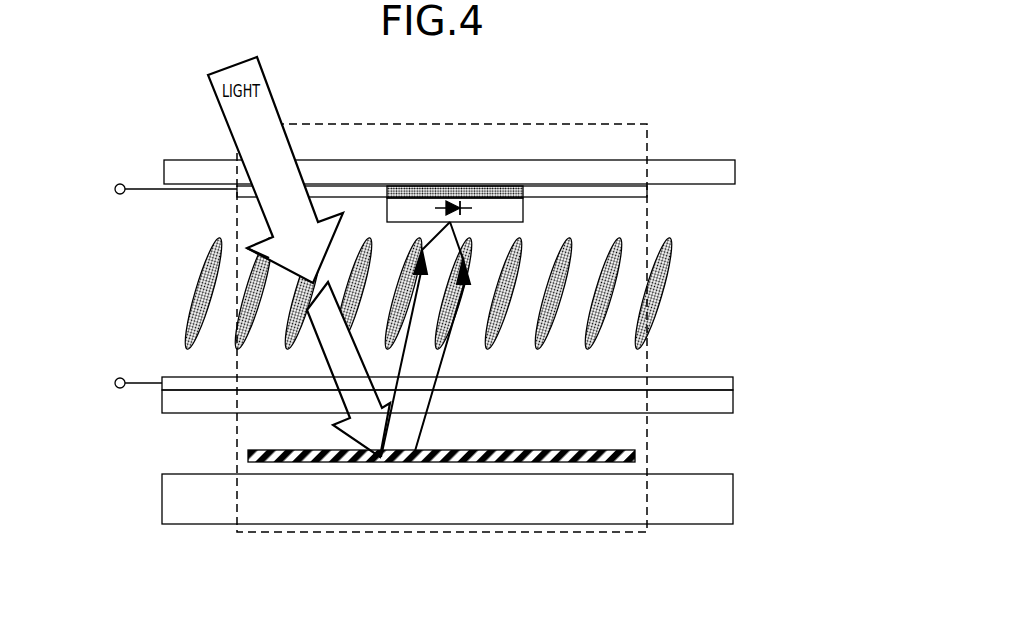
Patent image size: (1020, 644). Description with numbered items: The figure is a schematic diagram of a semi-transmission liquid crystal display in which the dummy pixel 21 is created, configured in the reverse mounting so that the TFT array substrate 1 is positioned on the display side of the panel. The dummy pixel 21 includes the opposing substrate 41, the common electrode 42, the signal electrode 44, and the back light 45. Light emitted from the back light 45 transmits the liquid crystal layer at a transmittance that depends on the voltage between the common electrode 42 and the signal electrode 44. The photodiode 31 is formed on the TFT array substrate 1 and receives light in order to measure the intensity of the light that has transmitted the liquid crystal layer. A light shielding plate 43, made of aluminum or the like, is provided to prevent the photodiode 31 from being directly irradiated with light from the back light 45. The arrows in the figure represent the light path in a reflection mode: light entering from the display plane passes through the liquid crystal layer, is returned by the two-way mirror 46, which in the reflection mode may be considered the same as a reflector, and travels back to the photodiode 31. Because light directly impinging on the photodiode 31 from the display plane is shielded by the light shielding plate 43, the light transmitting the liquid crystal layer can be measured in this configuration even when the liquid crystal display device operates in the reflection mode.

The TFT array substrate 1 is at (735, 167).
The dummy pixel 21 is at (647, 143).
The photodiode 31 is at (523, 210).
The opposing substrate 41 is at (733, 408).
The common electrode 42 is at (733, 383).
The light shielding plate 43 is at (448, 186).
The signal electrode 44 is at (647, 191).
The back light 45 is at (733, 495).
The two-way mirror 46 is at (635, 457).